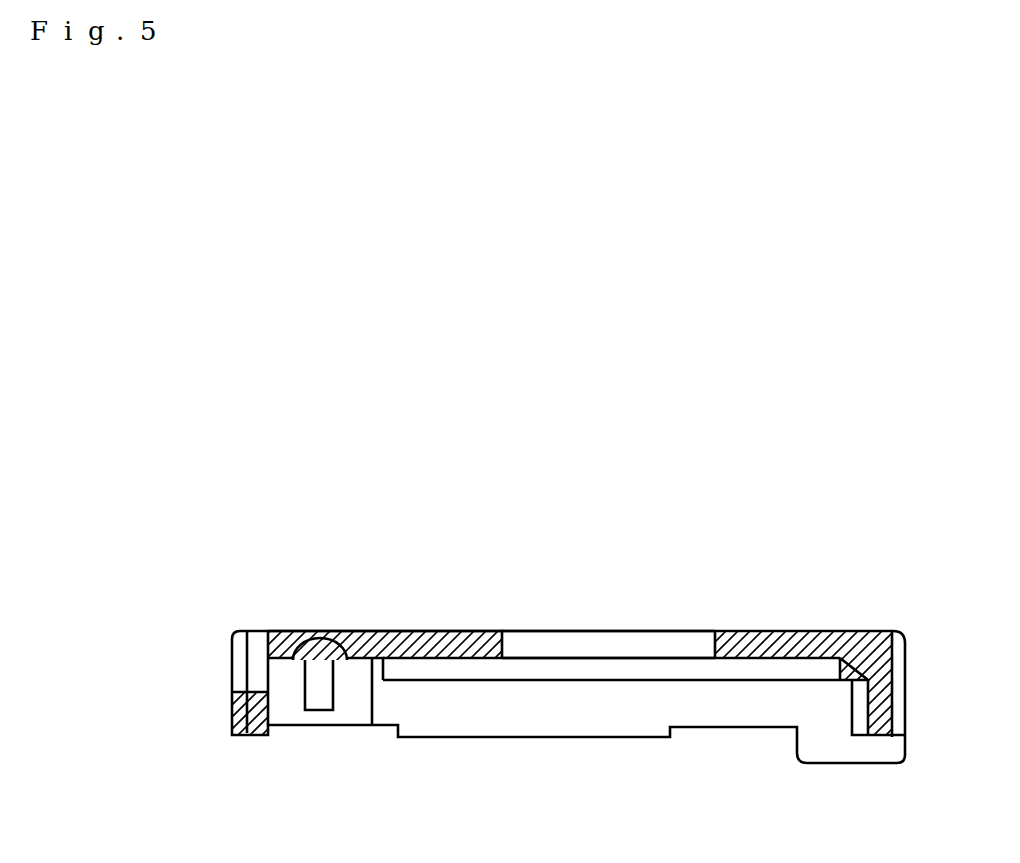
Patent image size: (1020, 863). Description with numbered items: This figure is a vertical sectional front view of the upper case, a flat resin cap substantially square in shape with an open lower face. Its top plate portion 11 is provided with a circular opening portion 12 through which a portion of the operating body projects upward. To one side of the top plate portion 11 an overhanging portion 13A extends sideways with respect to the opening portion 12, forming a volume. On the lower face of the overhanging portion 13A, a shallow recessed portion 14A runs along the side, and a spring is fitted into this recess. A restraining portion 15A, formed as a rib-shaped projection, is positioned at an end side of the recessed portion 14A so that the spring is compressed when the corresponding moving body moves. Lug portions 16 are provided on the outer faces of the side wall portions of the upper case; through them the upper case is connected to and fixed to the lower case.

The top plate portion 11 is at (806, 631).
The circular opening portion 12 is at (609, 632).
The overhanging portion 13A is at (277, 630).
The shallow recessed portion 14A is at (320, 650).
The restraining portion 15A is at (317, 703).
The lug portion 16 is at (232, 693).